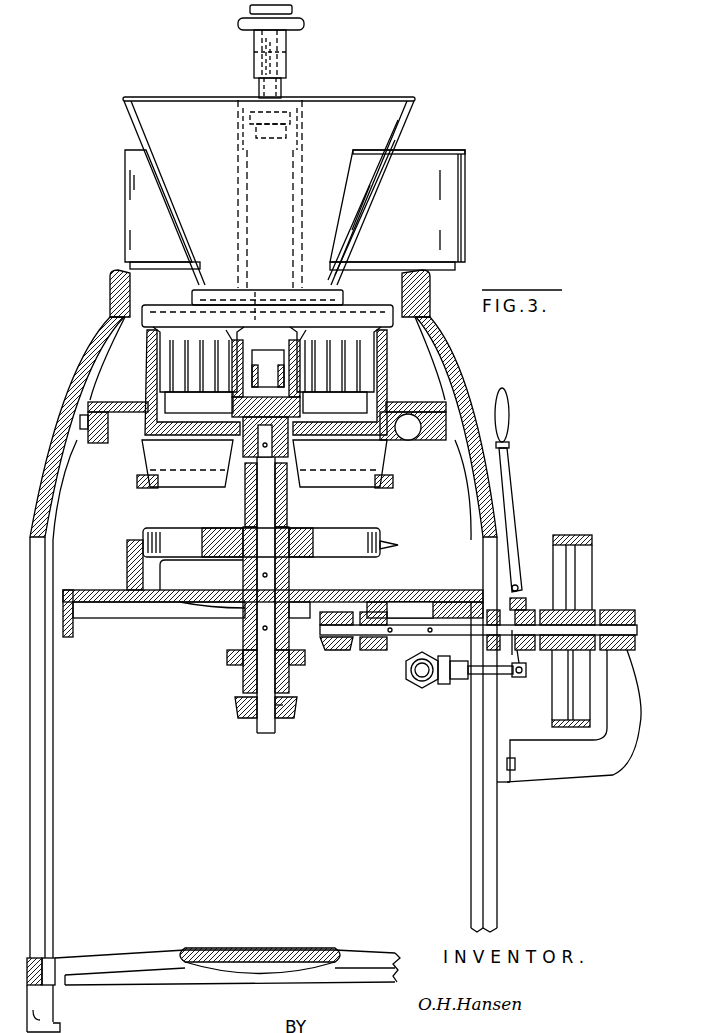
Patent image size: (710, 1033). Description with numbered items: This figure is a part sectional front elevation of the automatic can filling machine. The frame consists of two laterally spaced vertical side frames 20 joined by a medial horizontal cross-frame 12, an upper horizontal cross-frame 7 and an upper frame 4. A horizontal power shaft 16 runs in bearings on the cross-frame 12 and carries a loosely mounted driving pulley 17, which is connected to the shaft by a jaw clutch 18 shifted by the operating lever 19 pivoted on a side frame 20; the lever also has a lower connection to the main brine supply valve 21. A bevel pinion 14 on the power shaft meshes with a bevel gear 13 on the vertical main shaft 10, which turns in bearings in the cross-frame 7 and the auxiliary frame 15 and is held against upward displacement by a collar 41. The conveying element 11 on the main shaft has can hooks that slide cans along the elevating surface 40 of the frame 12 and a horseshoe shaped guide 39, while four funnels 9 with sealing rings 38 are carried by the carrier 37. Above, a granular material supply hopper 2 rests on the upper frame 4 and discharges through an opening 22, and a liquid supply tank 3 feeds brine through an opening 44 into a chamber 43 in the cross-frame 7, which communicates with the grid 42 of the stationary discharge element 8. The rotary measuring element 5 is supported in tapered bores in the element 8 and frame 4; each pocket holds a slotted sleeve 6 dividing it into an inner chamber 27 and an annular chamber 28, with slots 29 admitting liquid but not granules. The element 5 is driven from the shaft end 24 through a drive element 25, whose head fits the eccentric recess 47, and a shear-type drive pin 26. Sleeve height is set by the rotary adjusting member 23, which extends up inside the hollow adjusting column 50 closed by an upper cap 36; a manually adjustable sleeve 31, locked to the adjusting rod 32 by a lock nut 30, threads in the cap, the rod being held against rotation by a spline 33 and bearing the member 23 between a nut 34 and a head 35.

The granular material supply hopper 2 is at (269, 191).
The liquid supply tank 3 is at (397, 210).
The upper frame 4 is at (376, 312).
The measuring element 5 is at (387, 355).
The slotted vertically adjustable sleeve 6 is at (168, 372).
The horizontal cross-frame 7 is at (378, 395).
The stationary discharge element 8 is at (145, 425).
The funnels 9 is at (145, 462).
The vertical main shaft 10 is at (250, 735).
The conveying element 11 is at (300, 543).
The horizontal cross-frame 12 is at (436, 592).
The bevel gear 13 is at (215, 615).
The bevel pinion 14 is at (330, 655).
The auxiliary frame 15 is at (243, 680).
The horizontal power shaft 16 is at (637, 630).
The driving pulley 17 is at (585, 548).
The jaw clutch 18 is at (528, 610).
The operating lever 19 is at (510, 468).
The vertical side frames 20 is at (47, 725).
The main liquid or brine supply valve 21 is at (412, 686).
The opening 22 is at (192, 300).
The adjusting member 23 is at (238, 350).
The auxiliary drive shaft end 24 is at (280, 340).
The drive element 25 is at (262, 355).
The transverse tapered drive pin 26 is at (292, 406).
The chamber 27 is at (199, 403).
The chamber 28 is at (150, 352).
The slots 29 is at (350, 368).
The lock nut 30 is at (292, 10).
The manually adjustable sleeve 31 is at (246, 25).
The adjusting rod 32 is at (286, 45).
The spline 33 is at (254, 53).
The nut 34 is at (292, 126).
The head 35 is at (290, 144).
The upper cap 36 is at (282, 87).
The supporting element or carrier 37 is at (245, 505).
The sealing rings 38 is at (142, 488).
The horseshoe shaped guide 39 is at (392, 535).
The elevating surface 40 is at (200, 585).
The collar 41 is at (235, 712).
The grid 42 is at (335, 403).
The chamber 43 is at (335, 440).
The opening 44 is at (410, 440).
The eccentric recess 47 is at (243, 425).
The hollow adjusting column 50 is at (237, 222).